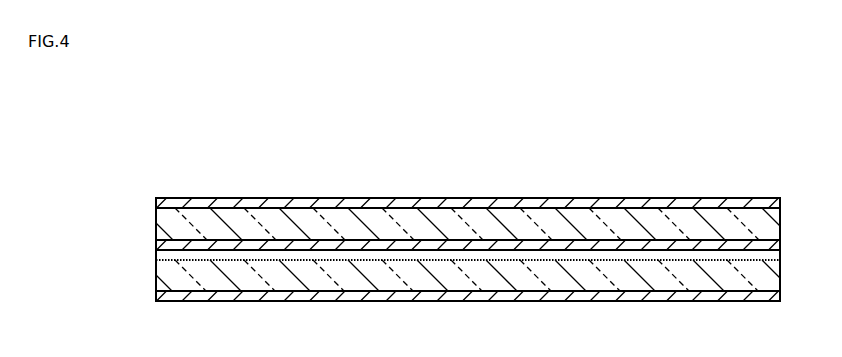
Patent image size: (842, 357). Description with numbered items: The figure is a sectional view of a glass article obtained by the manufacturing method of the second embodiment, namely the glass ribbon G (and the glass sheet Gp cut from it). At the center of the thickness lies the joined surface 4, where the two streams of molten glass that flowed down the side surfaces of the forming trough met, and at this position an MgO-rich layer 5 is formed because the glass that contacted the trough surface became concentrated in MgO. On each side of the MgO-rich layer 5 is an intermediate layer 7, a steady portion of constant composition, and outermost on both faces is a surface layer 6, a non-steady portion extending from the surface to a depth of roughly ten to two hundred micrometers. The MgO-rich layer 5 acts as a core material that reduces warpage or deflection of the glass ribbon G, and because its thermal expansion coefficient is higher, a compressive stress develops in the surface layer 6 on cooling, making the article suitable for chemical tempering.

The glass ribbon G is at (494, 160).
The joined surface 4 is at (743, 255).
The MgO-rich layer 5 is at (151, 240).
The surface layer 6 is at (587, 203).
The intermediate layer 7 is at (343, 225).